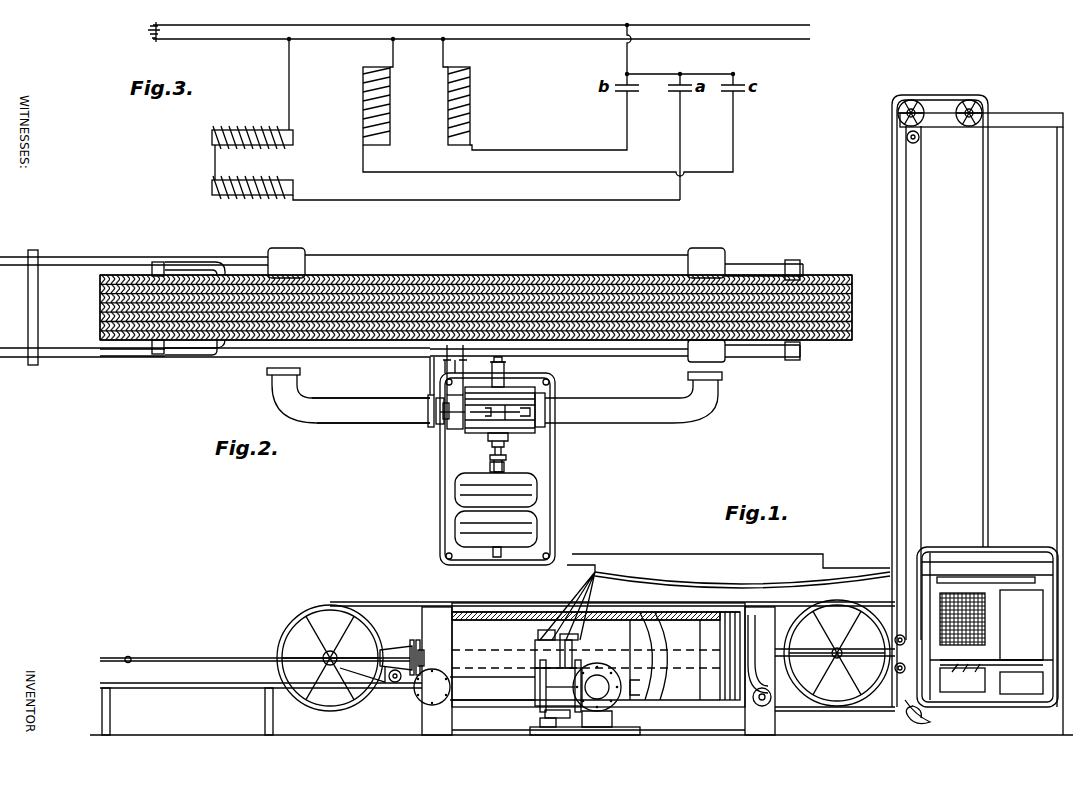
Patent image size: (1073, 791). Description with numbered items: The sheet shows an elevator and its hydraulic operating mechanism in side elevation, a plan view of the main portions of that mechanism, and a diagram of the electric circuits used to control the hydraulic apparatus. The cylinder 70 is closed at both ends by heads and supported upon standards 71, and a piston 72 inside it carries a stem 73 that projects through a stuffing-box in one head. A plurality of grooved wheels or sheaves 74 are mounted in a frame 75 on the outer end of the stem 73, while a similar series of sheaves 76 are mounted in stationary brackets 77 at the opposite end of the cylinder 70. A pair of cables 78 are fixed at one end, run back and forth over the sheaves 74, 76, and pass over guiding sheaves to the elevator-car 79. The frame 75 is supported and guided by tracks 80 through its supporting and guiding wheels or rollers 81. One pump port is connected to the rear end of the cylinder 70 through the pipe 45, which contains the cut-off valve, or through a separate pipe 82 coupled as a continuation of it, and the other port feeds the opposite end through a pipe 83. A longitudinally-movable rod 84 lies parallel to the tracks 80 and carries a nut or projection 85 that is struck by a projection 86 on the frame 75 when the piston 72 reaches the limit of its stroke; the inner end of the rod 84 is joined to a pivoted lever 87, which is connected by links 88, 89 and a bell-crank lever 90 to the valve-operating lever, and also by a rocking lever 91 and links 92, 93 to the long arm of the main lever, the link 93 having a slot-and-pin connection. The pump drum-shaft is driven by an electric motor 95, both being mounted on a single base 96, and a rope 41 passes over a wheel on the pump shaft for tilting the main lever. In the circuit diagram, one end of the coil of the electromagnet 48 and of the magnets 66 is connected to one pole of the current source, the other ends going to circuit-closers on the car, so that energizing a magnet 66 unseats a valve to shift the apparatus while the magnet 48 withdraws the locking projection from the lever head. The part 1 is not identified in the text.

In FIG. 2, the valve casing 1 is at (497, 461).
In FIG. 1, the rope 41 is at (927, 465).
In FIG. 2, the pipe 45 is at (440, 420).
In FIG. 1, the pipe 45 is at (537, 686).
In FIG. 3, the electromagnet 48 is at (446, 119).
In FIG. 3, the magnet 66 is at (426, 93).
In FIG. 2, the cylinder 70 is at (535, 264).
In FIG. 1, the cylinder 70 is at (598, 666).
In FIG. 1, the standards 71 is at (598, 671).
In FIG. 1, the piston 72 is at (720, 633).
In FIG. 1, the stem 73 is at (690, 660).
In FIG. 2, the grooved wheels or sheaves 74 is at (458, 307).
In FIG. 1, the grooved wheels or sheaves 74 is at (330, 658).
In FIG. 2, the frame 75 is at (141, 365).
In FIG. 1, the frame 75 is at (388, 650).
In FIG. 2, the sheaves 76 is at (815, 333).
In FIG. 1, the sheaves 76 is at (837, 653).
In FIG. 2, the stationary brackets 77 is at (762, 345).
In FIG. 1, the stationary brackets 77 is at (835, 649).
In FIG. 2, the cables 78 is at (864, 307).
In FIG. 1, the cables 78 is at (672, 403).
In FIG. 1, the elevator-car 79 is at (981, 424).
In FIG. 2, the tracks 80 is at (215, 301).
In FIG. 1, the tracks 80 is at (261, 709).
In FIG. 1, the supporting and guiding wheels or rollers 81 is at (393, 681).
In FIG. 2, the pipe 82 is at (378, 392).
In FIG. 1, the pipe 82 is at (474, 687).
In FIG. 2, the pipe 83 is at (628, 399).
In FIG. 1, the pipe 83 is at (650, 690).
In FIG. 2, the longitudinally-movable rod 84 is at (348, 391).
In FIG. 1, the longitudinally-movable rod 84 is at (215, 647).
In FIG. 1, the nut or projection 85 is at (128, 656).
In FIG. 2, the projection 86 is at (228, 350).
In FIG. 1, the projection 86 is at (414, 642).
In FIG. 1, the pivoted lever 87 is at (530, 720).
In FIG. 1, the link 88 is at (552, 721).
In FIG. 1, the link 89 is at (597, 712).
In FIG. 1, the bell-crank lever 90 is at (556, 722).
In FIG. 1, the rocking lever 91 is at (548, 640).
In FIG. 1, the link 92 is at (578, 640).
In FIG. 1, the link 93 is at (535, 646).
In FIG. 2, the electric motor 95 is at (496, 509).
In FIG. 2, the base 96 is at (509, 452).